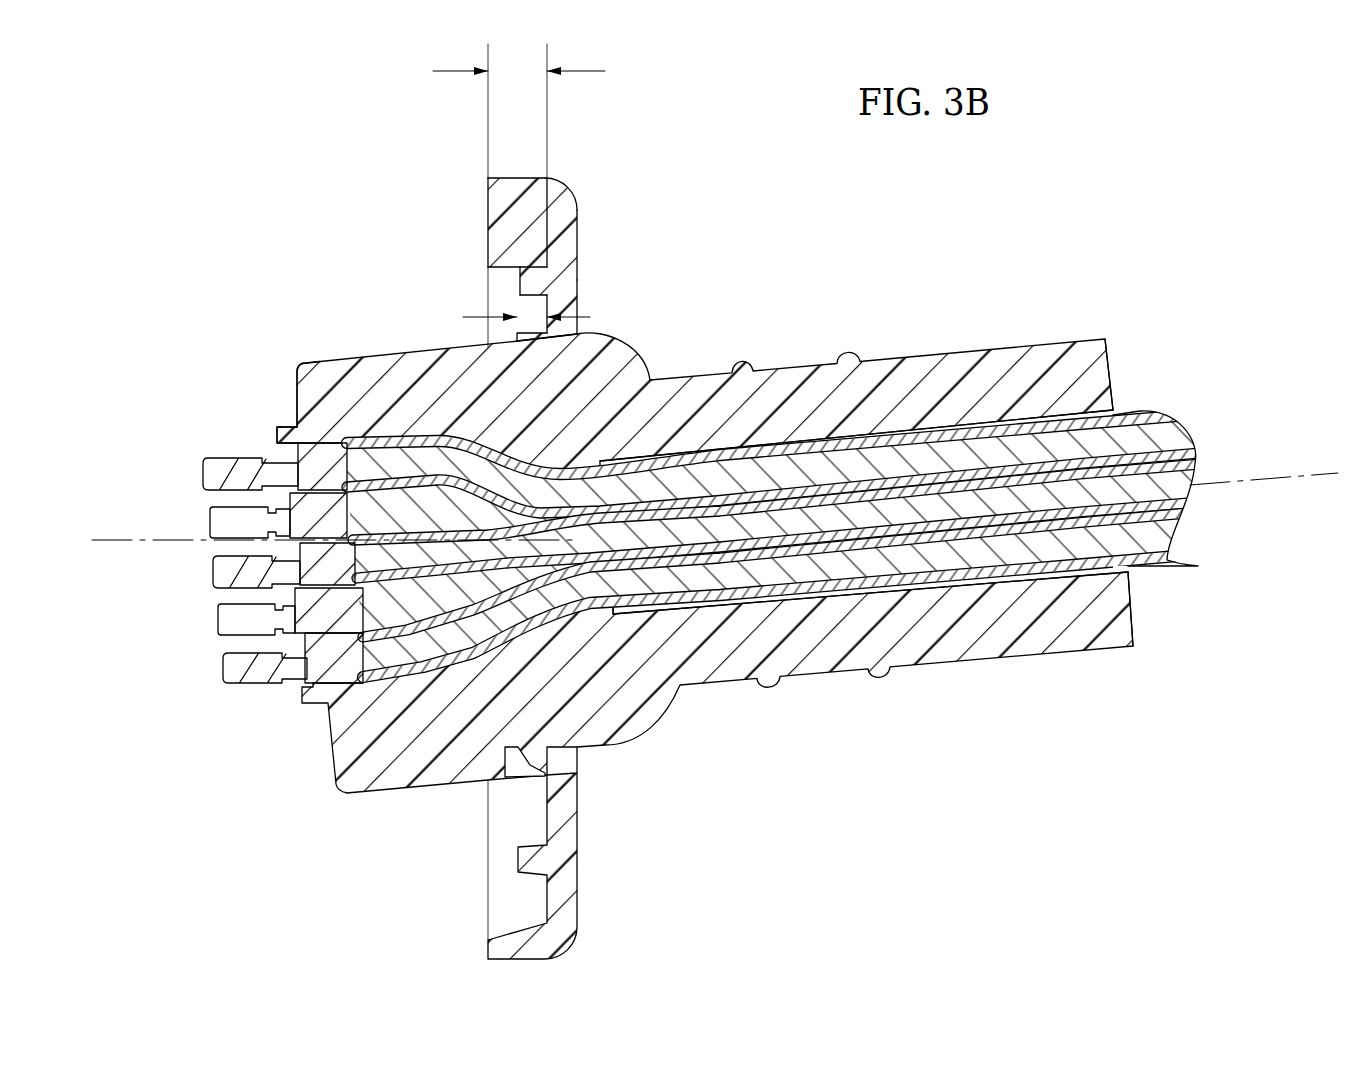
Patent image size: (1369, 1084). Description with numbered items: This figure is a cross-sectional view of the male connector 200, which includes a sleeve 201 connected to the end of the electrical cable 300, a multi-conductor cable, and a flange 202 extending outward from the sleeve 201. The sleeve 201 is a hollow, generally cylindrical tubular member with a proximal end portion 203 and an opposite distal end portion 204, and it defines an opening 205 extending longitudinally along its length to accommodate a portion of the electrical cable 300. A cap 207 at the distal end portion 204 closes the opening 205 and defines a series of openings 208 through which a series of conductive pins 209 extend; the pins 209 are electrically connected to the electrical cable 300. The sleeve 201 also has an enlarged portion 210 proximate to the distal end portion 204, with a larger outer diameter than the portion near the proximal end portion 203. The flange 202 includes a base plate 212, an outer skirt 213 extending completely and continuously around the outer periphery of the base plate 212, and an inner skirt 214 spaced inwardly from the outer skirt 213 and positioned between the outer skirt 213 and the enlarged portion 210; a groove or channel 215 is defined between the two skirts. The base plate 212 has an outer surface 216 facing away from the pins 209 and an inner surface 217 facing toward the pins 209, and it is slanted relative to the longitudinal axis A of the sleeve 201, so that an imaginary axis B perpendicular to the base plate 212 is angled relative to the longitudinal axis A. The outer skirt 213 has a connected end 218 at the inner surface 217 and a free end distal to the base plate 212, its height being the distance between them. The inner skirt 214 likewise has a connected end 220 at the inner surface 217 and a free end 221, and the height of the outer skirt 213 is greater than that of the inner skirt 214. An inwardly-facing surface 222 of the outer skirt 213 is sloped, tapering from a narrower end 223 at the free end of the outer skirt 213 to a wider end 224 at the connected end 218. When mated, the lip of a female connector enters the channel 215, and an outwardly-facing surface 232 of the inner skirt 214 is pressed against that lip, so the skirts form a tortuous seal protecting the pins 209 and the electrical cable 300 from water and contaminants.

The male connector 200 is at (693, 793).
The sleeve 201 is at (950, 378).
The flange 202 is at (595, 201).
The proximal end portion 203 is at (1108, 345).
The distal end portion 204 is at (305, 390).
The opening 205 is at (1010, 583).
The cap 207 is at (298, 408).
The openings 208 is at (313, 540).
The conductive pins 209 is at (233, 620).
The enlarged portion 210 is at (440, 763).
The base plate 212 is at (565, 247).
The outer skirt 213 is at (493, 188).
The inner skirt 214 is at (520, 268).
The groove or channel 215 is at (537, 245).
The outer surface 216 is at (577, 302).
The inner surface 217 is at (545, 300).
The connected end 218 is at (553, 197).
The connected end 220 is at (549, 279).
The free end 221 is at (520, 283).
The inwardly-facing surface 222 is at (537, 215).
The narrower end 223 is at (487, 200).
The wider end 224 is at (548, 211).
The outwardly-facing surface 232 is at (520, 247).
The electrical cable 300 is at (1150, 445).
The longitudinal axis A is at (1263, 478).
The imaginary axis B is at (122, 538).